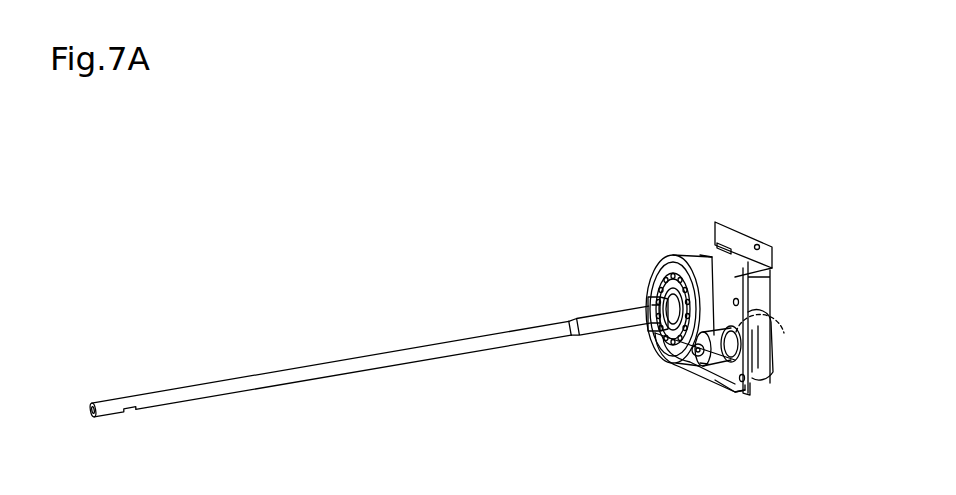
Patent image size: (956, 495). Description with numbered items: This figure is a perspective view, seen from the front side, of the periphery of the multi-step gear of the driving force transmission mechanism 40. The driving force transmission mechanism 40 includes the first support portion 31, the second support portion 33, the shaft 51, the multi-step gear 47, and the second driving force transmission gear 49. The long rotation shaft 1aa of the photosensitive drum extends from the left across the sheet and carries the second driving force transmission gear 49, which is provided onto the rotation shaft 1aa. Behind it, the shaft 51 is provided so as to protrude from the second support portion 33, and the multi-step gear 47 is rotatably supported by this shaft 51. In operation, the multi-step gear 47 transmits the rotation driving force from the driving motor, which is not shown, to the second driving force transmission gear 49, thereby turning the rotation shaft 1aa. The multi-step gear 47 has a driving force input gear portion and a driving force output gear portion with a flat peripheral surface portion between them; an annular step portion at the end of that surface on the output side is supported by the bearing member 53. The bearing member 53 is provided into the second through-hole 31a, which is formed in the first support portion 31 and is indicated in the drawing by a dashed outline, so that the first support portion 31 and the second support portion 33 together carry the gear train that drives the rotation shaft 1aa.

The rotation shaft 1aa is at (377, 358).
The second driving force transmission gear 49 is at (652, 271).
The driving force transmission mechanism 40 is at (751, 230).
The second support portion 33 is at (767, 292).
The second through-hole 31a is at (782, 316).
The first support portion 31 is at (704, 372).
The shaft 51 is at (698, 352).
The bearing member 53 is at (731, 389).
The multi-step gear 47 is at (773, 375).